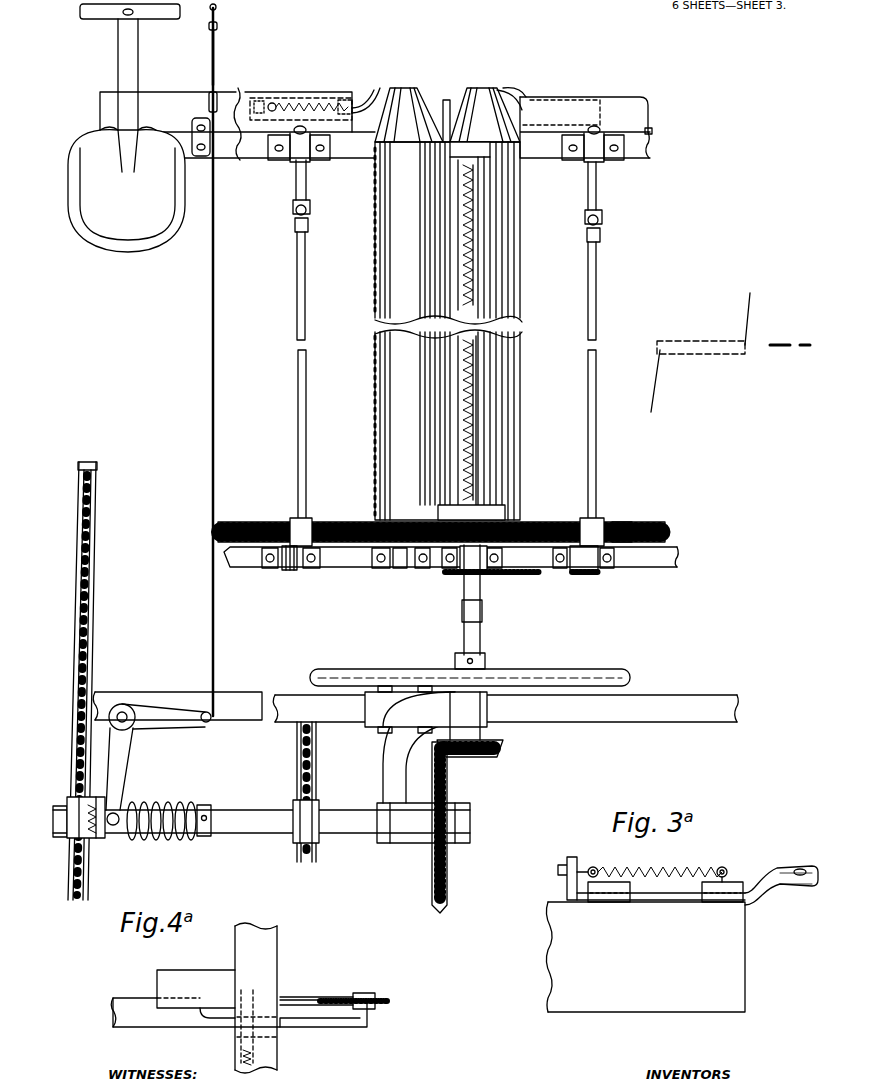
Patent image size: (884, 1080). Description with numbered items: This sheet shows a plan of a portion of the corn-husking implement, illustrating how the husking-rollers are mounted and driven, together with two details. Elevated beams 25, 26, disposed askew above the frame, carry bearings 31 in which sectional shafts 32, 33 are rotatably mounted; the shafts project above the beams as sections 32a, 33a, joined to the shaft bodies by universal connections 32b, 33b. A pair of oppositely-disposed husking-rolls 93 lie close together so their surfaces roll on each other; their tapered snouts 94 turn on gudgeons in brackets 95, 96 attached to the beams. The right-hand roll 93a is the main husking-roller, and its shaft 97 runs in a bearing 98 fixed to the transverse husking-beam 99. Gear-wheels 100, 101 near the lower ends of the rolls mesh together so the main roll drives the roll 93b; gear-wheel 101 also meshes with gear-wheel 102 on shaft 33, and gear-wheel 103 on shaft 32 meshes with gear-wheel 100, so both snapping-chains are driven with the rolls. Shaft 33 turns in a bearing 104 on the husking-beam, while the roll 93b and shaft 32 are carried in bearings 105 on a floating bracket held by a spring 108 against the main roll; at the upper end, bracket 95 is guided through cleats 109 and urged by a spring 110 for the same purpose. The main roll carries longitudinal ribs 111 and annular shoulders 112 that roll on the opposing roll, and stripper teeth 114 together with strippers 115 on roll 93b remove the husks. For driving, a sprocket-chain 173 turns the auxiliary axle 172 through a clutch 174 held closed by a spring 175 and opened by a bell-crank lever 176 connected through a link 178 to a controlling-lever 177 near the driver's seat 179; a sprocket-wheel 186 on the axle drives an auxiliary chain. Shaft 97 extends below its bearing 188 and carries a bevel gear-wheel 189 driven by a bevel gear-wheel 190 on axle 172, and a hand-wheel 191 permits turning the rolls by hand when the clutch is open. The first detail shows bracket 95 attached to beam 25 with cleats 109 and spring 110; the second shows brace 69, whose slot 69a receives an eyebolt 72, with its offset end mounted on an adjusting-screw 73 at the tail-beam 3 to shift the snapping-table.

In FIG. 3, the tail-beam 3 is at (668, 723).
In FIG. 4a, the tail-beam 3 is at (255, 957).
In FIG. 3, the elevated beam 25 is at (176, 103).
In FIG. 3a, the elevated beam 25 is at (645, 934).
In FIG. 3, the elevated beam 26 is at (652, 131).
In FIG. 3, the bearing 31 is at (322, 160).
In FIG. 3, the shaft 32 is at (296, 250).
In FIG. 3, the shaft section 32a is at (296, 180).
In FIG. 3, the universal connection 32b is at (310, 219).
In FIG. 3, the shaft 33 is at (598, 305).
In FIG. 3, the shaft section 33a is at (598, 207).
In FIG. 3, the universal connection 33b is at (600, 237).
In FIG. 4a, the brace 69 is at (178, 1012).
In FIG. 4a, the slot 69a is at (292, 1024).
In FIG. 4a, the eyebolt 72 is at (252, 992).
In FIG. 4a, the adjusting-screw 73 is at (390, 1002).
In FIG. 3, the husking-roll 93 is at (382, 367).
In FIG. 3, the main husking-roller 93a is at (514, 378).
In FIG. 3, the husking-roll 93b is at (385, 423).
In FIG. 3, the tapered snout 94 is at (425, 125).
In FIG. 3, the bracket 95 is at (381, 93).
In FIG. 3a, the bracket 95 is at (788, 886).
In FIG. 3, the bracket 96 is at (516, 96).
In FIG. 3, the shaft 97 is at (481, 595).
In FIG. 3, the bearing 98 is at (463, 566).
In FIG. 3, the husking-beam 99 is at (655, 568).
In FIG. 3, the gear-wheel 100 is at (385, 528).
In FIG. 3, the gear-wheel 101 is at (508, 528).
In FIG. 3, the gear-wheel 102 is at (626, 524).
In FIG. 3, the gear-wheel 103 is at (318, 524).
In FIG. 3, the bearing 104 is at (592, 572).
In FIG. 3, the bearing 105 is at (291, 565).
In FIG. 3, the spring 108 is at (536, 573).
In FIG. 3, the cleat 109 is at (283, 100).
In FIG. 3a, the cleat 109 is at (612, 880).
In FIG. 3, the spring 110 is at (330, 100).
In FIG. 3a, the spring 110 is at (674, 870).
In FIG. 3, the rib 111 is at (508, 412).
In FIG. 3, the annular shoulder 112 is at (498, 502).
In FIG. 3, the teeth 114 is at (466, 278).
In FIG. 3, the stripper 115 is at (373, 288).
In FIG. 3, the auxiliary axle 172 is at (232, 818).
In FIG. 3, the sprocket-chain 173 is at (97, 568).
In FIG. 3, the clutch 174 is at (104, 838).
In FIG. 3, the spring 175 is at (176, 840).
In FIG. 3, the bell-crank lever 176 is at (140, 709).
In FIG. 3, the controlling-lever 177 is at (216, 53).
In FIG. 3, the link 178 is at (211, 405).
In FIG. 3, the seat 179 is at (126, 128).
In FIG. 3, the sprocket-wheel 186 is at (320, 838).
In FIG. 3, the bearing 188 is at (478, 722).
In FIG. 3, the bevel gear-wheel 189 is at (485, 759).
In FIG. 3, the bevel gear-wheel 190 is at (449, 890).
In FIG. 3, the hand-wheel 191 is at (515, 673).